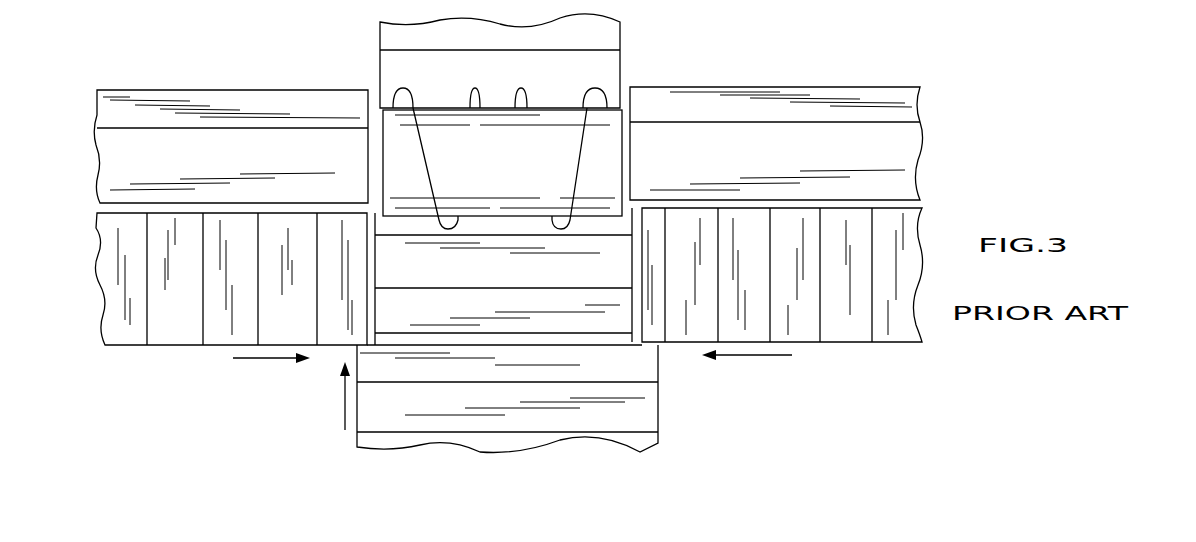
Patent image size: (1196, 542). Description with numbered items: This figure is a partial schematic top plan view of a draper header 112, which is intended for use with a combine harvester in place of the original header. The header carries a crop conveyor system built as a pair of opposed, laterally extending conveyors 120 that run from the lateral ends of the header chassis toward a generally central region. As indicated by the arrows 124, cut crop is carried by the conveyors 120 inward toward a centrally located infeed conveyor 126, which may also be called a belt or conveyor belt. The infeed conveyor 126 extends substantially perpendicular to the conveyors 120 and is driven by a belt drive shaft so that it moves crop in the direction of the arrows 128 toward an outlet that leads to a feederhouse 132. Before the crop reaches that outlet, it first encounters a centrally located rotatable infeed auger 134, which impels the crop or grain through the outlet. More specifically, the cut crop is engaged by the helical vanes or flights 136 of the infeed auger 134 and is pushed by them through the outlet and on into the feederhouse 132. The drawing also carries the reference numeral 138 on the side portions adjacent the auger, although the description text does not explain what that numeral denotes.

The draper header 112 is at (868, 60).
The laterally extending conveyors 120 is at (175, 345).
The arrows 124 is at (263, 360).
The infeed conveyor 126 is at (660, 410).
The arrows 128 is at (341, 407).
The feederhouse 132 is at (632, 29).
The infeed auger 134 is at (517, 186).
The helical vanes or flights 136 is at (400, 92).
The side flanges 138 is at (375, 173).